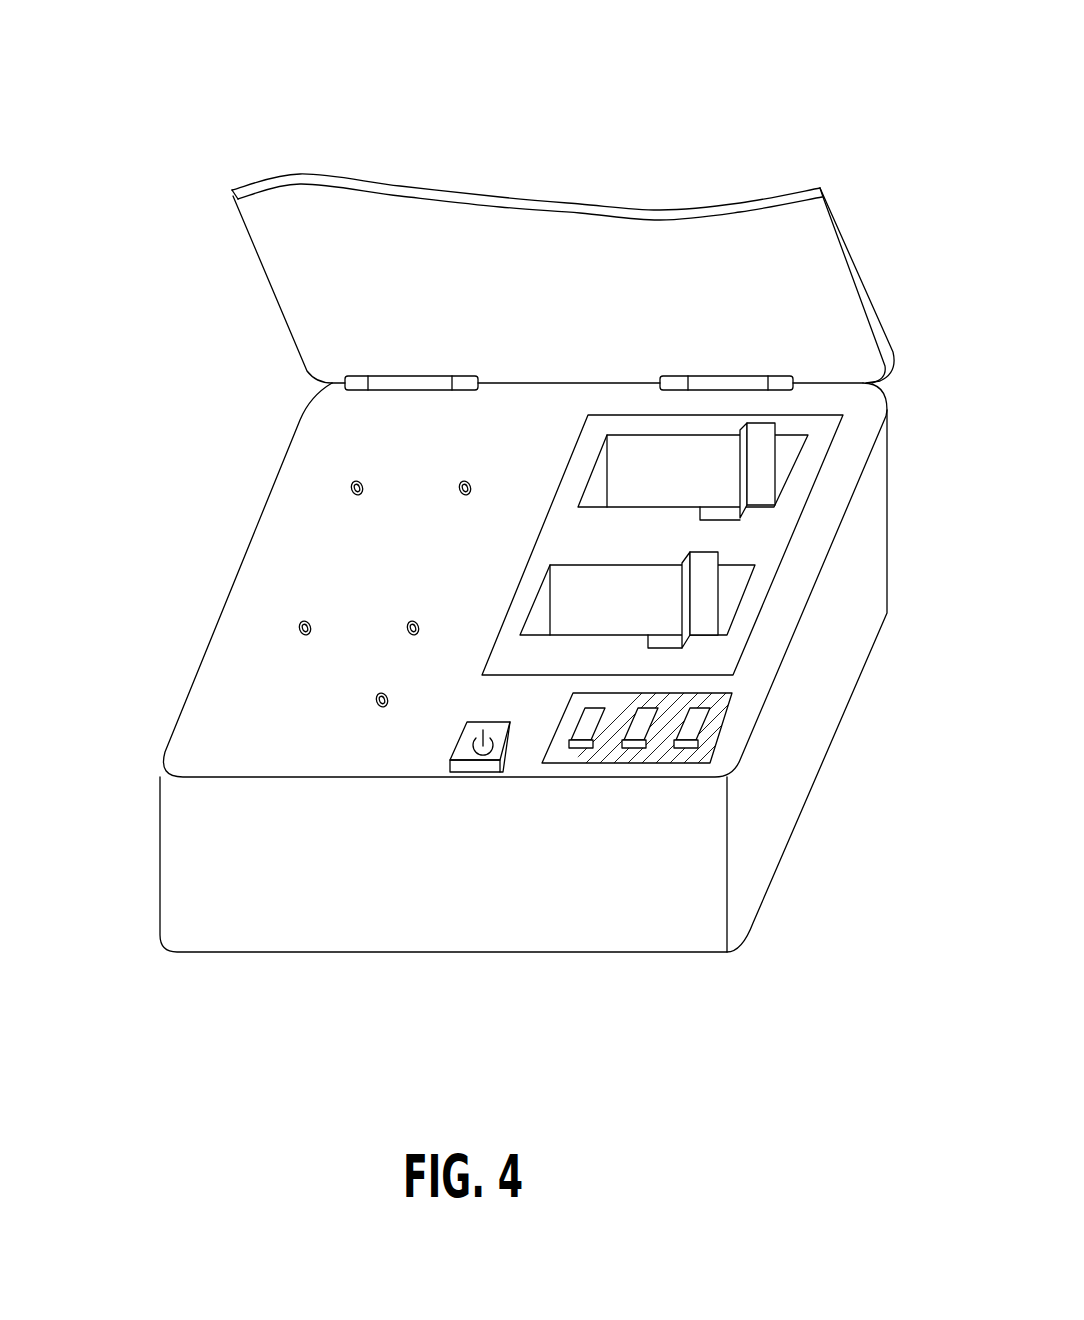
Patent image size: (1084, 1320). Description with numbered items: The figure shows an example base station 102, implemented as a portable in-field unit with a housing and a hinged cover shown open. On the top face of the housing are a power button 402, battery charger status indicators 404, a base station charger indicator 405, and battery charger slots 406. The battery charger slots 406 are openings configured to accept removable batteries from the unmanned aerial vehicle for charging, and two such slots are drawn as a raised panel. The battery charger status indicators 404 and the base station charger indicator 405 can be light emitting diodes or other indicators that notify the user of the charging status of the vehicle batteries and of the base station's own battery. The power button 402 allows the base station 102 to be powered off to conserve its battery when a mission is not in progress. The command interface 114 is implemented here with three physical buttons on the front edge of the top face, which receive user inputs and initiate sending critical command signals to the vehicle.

The base station 102 is at (230, 76).
The battery charger status indicators 404 is at (340, 393).
The base station charger indicator 405 is at (208, 727).
The battery charger slots 406 is at (522, 561).
The power button 402 is at (450, 760).
The command interface 114 is at (540, 788).